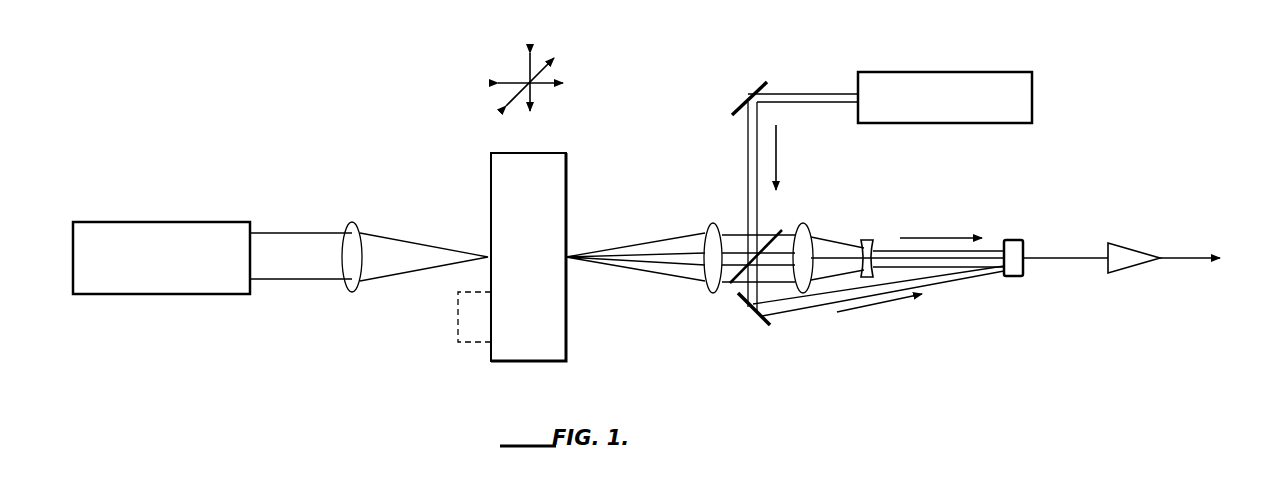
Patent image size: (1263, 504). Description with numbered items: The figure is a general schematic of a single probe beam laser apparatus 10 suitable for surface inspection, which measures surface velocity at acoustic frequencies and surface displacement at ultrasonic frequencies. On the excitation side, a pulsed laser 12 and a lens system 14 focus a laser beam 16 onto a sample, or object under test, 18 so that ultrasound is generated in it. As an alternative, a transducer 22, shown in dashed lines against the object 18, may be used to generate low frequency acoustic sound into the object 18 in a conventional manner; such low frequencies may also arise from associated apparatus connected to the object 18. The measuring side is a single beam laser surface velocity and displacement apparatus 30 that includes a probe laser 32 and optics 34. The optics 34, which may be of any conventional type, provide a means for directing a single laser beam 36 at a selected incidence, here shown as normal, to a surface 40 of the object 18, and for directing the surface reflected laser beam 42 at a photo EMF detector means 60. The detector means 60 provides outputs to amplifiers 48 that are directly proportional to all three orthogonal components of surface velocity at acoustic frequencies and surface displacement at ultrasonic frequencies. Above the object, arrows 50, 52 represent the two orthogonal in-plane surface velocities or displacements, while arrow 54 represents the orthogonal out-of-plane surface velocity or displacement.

The laser apparatus 10 is at (693, 66).
The pulsed laser 12 is at (150, 222).
The lens system 14 is at (352, 222).
The laser beam 16 is at (287, 280).
The object under test 18 is at (566, 340).
The transducer 22 is at (462, 345).
The single beam laser surface velocity and displacement apparatus 30 is at (812, 325).
The probe laser 32 is at (935, 72).
The optics 34 is at (812, 200).
The single laser beam 36 is at (670, 262).
The surface 40 is at (560, 258).
The surface reflected laser beam 42 is at (838, 240).
The amplifiers 48 is at (1135, 248).
The arrow 50 is at (525, 65).
The arrow 52 is at (545, 62).
The arrow 54 is at (551, 80).
The photo EMF detector means 60 is at (1018, 240).